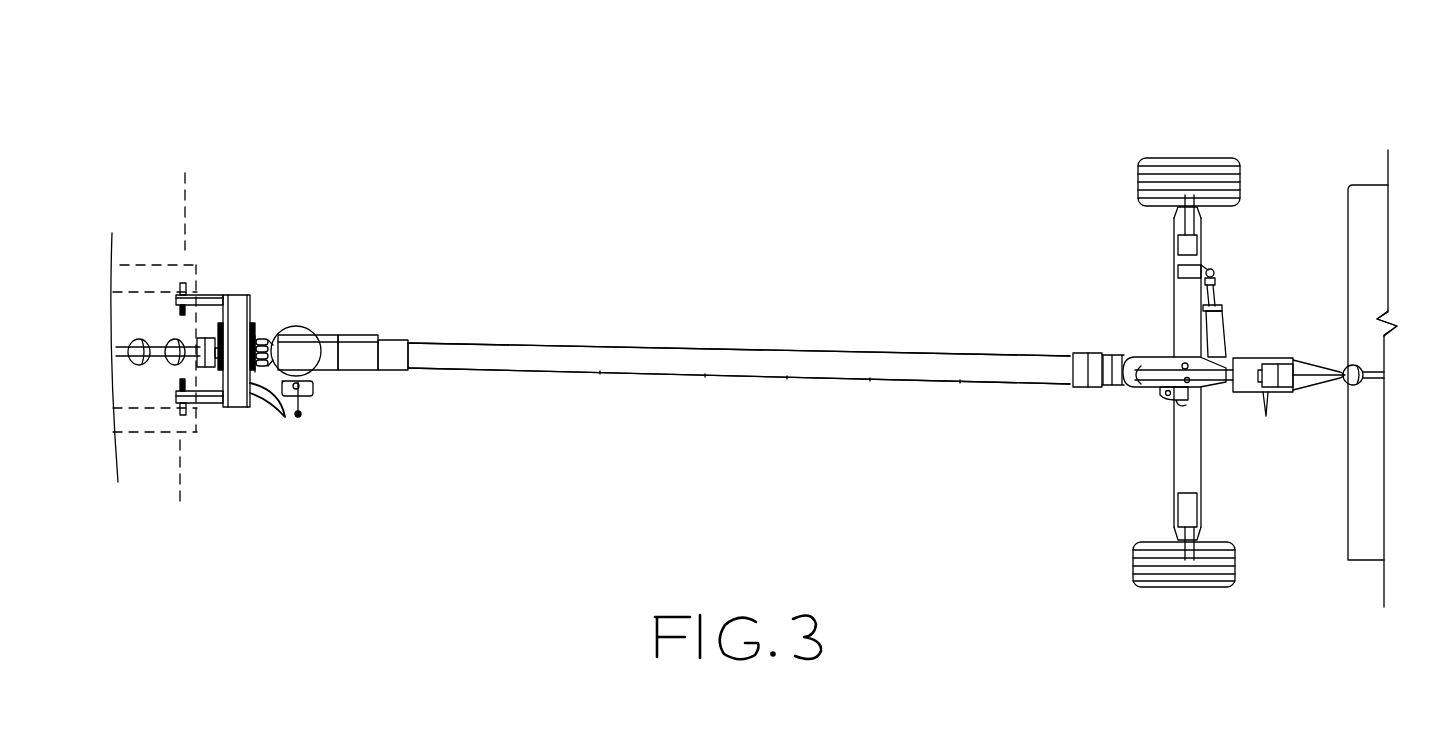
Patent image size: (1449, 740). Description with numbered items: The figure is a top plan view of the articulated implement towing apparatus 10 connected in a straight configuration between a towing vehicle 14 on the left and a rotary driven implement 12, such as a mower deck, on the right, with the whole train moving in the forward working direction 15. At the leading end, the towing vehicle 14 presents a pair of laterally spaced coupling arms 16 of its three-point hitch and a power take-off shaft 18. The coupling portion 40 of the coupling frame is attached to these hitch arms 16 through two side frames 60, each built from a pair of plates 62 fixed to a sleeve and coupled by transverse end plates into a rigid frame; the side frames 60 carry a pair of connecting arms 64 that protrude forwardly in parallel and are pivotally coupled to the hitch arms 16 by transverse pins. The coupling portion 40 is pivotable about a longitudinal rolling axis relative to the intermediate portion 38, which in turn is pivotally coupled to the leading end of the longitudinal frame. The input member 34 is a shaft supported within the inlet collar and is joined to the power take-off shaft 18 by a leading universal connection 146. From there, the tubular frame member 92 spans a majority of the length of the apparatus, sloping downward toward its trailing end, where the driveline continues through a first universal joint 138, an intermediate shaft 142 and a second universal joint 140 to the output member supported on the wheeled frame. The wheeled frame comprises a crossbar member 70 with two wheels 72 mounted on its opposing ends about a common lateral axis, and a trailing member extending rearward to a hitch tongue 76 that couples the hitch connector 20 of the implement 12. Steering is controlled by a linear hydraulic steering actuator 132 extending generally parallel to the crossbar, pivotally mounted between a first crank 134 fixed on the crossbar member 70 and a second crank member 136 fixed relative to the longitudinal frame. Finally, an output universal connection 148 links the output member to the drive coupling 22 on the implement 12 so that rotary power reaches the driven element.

The articulated implement towing apparatus 10 is at (923, 175).
The rotary driven implement 12 is at (1360, 548).
The towing vehicle 14 is at (133, 232).
The forward working direction 15 is at (597, 153).
The coupling arms 16 is at (148, 263).
The power take-off shaft 18 is at (128, 343).
The hitch connector 20 is at (1343, 397).
The drive coupling 22 is at (1380, 368).
The input member 34 is at (216, 293).
The intermediate portion 38 is at (300, 324).
The coupling portion 40 is at (258, 294).
The side frames 60 is at (234, 294).
The plates 62 is at (285, 418).
The connecting arms 64 is at (196, 348).
The crossbar member 70 is at (1178, 463).
The wheels 72 is at (1165, 175).
The hitch tongue 76 is at (1330, 384).
The tubular frame member 92 is at (752, 365).
The steering actuator 132 is at (1218, 322).
The first crank 134 is at (1212, 265).
The second crank member 136 is at (1207, 389).
The first universal joint 138 is at (1128, 392).
The second universal joint 140 is at (1252, 392).
The intermediate shaft 142 is at (1158, 360).
The leading universal connection 146 is at (150, 355).
The output universal connection 148 is at (1319, 362).